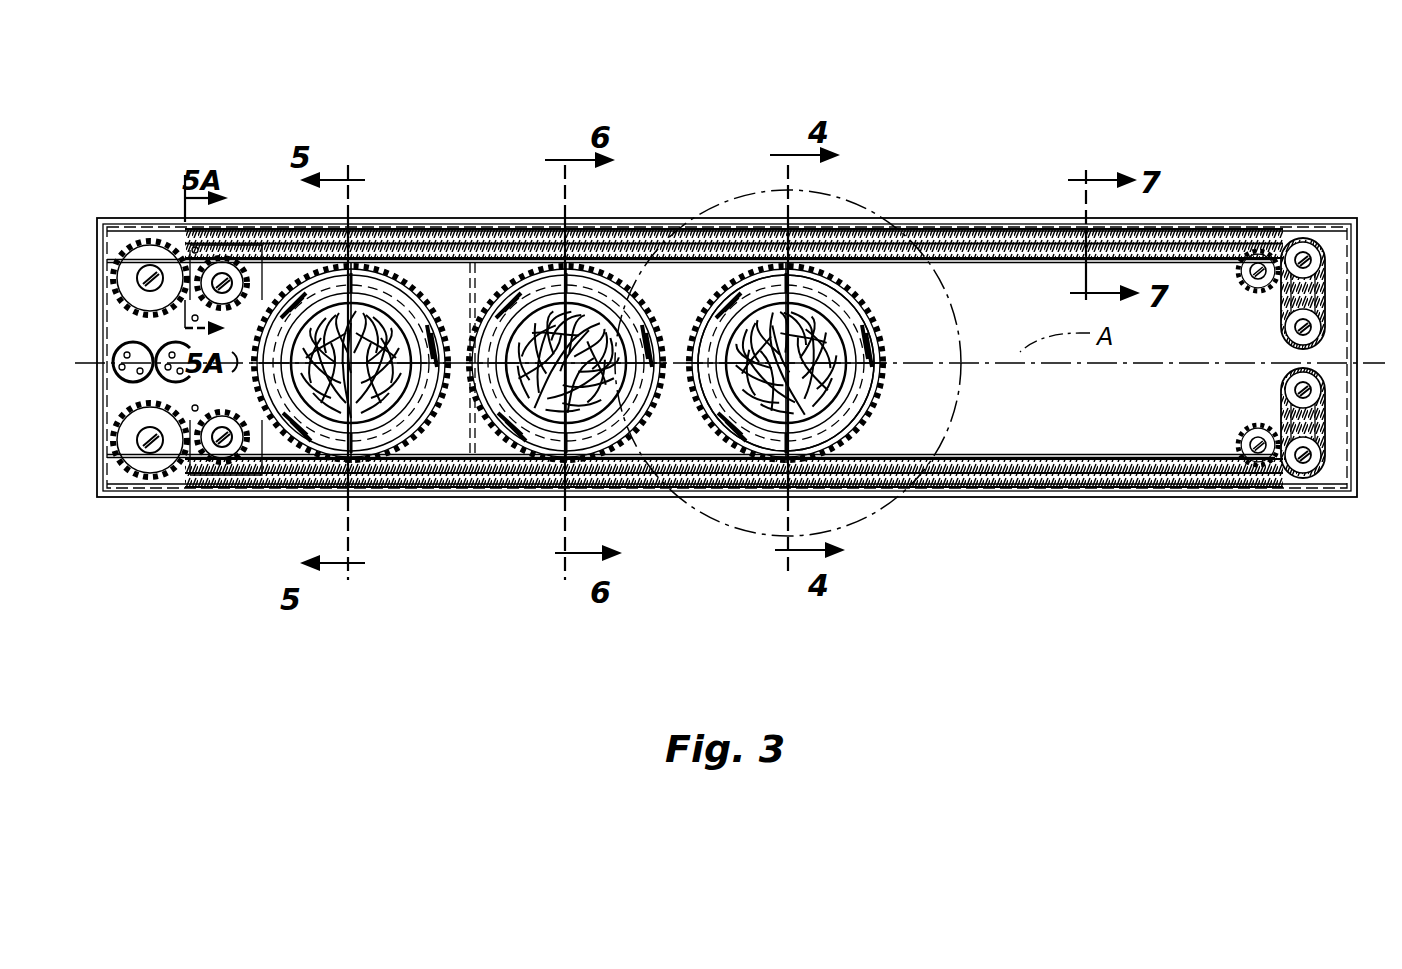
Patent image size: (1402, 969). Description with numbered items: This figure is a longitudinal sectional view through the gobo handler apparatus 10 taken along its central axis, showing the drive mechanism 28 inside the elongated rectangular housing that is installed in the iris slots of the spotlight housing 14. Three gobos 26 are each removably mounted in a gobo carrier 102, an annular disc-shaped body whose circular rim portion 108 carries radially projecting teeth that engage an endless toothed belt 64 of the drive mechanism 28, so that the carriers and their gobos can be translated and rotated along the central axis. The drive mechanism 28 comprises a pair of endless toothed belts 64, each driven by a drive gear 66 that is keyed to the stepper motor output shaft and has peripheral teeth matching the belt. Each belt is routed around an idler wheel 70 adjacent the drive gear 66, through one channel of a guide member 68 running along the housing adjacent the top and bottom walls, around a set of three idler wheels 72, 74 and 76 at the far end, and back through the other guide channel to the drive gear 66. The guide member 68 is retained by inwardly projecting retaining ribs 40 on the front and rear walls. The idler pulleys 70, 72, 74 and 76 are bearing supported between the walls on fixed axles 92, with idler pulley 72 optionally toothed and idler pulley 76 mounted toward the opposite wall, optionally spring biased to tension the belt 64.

The gobo handler apparatus 10 is at (722, 145).
The spotlight housing 14 is at (845, 195).
The gobo 26 is at (845, 405).
The drive mechanism 28 is at (412, 232).
The retaining rib 40 is at (980, 263).
The endless toothed belt 64 is at (208, 490).
The drive gear 66 is at (250, 472).
The guide member 68 is at (1193, 232).
The idler wheel 70 is at (128, 262).
The idler pulley 72 is at (1245, 290).
The idler pulley 74 is at (1307, 250).
The idler pulley 76 is at (1303, 392).
The fixed axle 92 is at (1312, 390).
The gobo carrier 102 is at (616, 357).
The circular rim portion 108 is at (866, 292).